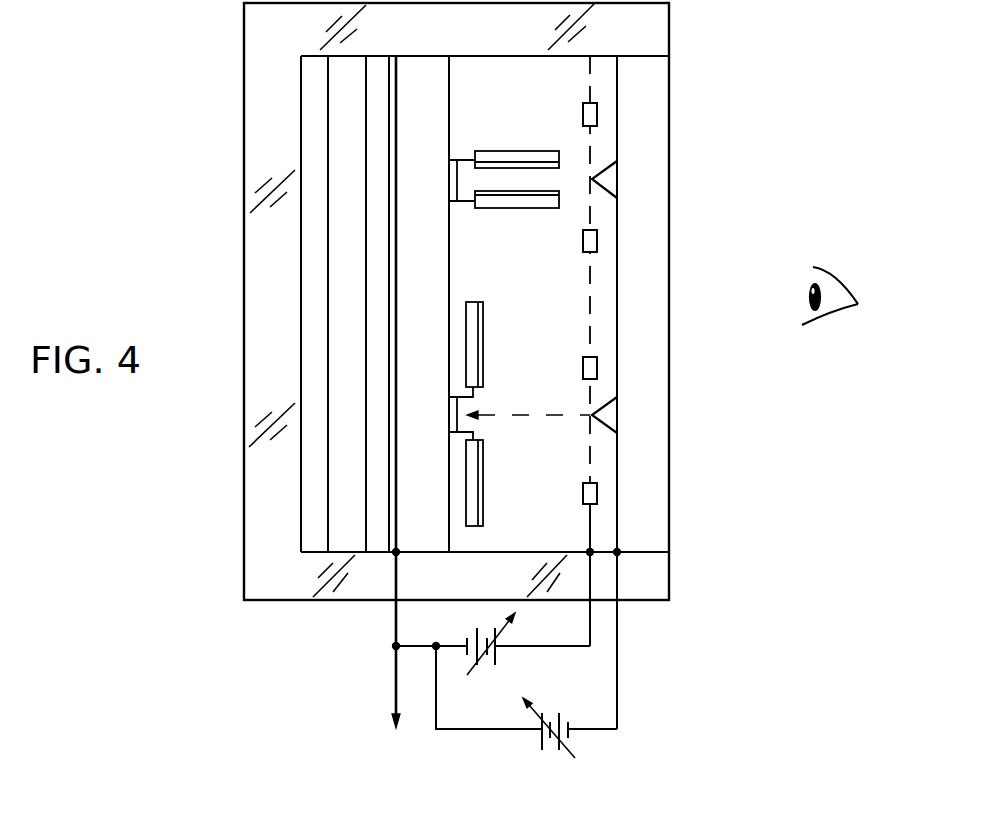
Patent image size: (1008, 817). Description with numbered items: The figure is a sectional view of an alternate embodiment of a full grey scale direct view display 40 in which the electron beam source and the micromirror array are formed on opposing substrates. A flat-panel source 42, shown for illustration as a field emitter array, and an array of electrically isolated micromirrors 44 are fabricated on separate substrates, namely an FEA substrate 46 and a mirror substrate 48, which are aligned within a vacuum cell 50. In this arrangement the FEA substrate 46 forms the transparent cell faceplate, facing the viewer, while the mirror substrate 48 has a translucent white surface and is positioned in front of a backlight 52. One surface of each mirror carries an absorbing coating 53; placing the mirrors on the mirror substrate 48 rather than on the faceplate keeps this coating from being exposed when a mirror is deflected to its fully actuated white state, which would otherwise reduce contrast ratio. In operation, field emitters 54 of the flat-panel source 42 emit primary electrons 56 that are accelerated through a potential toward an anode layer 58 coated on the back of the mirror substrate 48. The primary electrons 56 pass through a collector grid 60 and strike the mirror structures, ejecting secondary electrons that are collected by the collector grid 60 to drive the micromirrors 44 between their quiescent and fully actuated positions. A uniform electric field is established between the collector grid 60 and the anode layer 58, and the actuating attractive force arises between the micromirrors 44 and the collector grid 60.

The full grey scale direct view display 40 is at (175, 550).
The flat-panel source 42 is at (702, 65).
The micromirrors 44 is at (523, 120).
The FEA substrate 46 is at (657, 340).
The mirror substrate 48 is at (437, 267).
The vacuum cell 50 is at (258, 92).
The backlight 52 is at (350, 299).
The absorbing coating 53 is at (483, 327).
The field emitters 54 is at (606, 414).
The primary electrons 56 is at (537, 418).
The anode layer 58 is at (393, 507).
The collector grid 60 is at (597, 241).